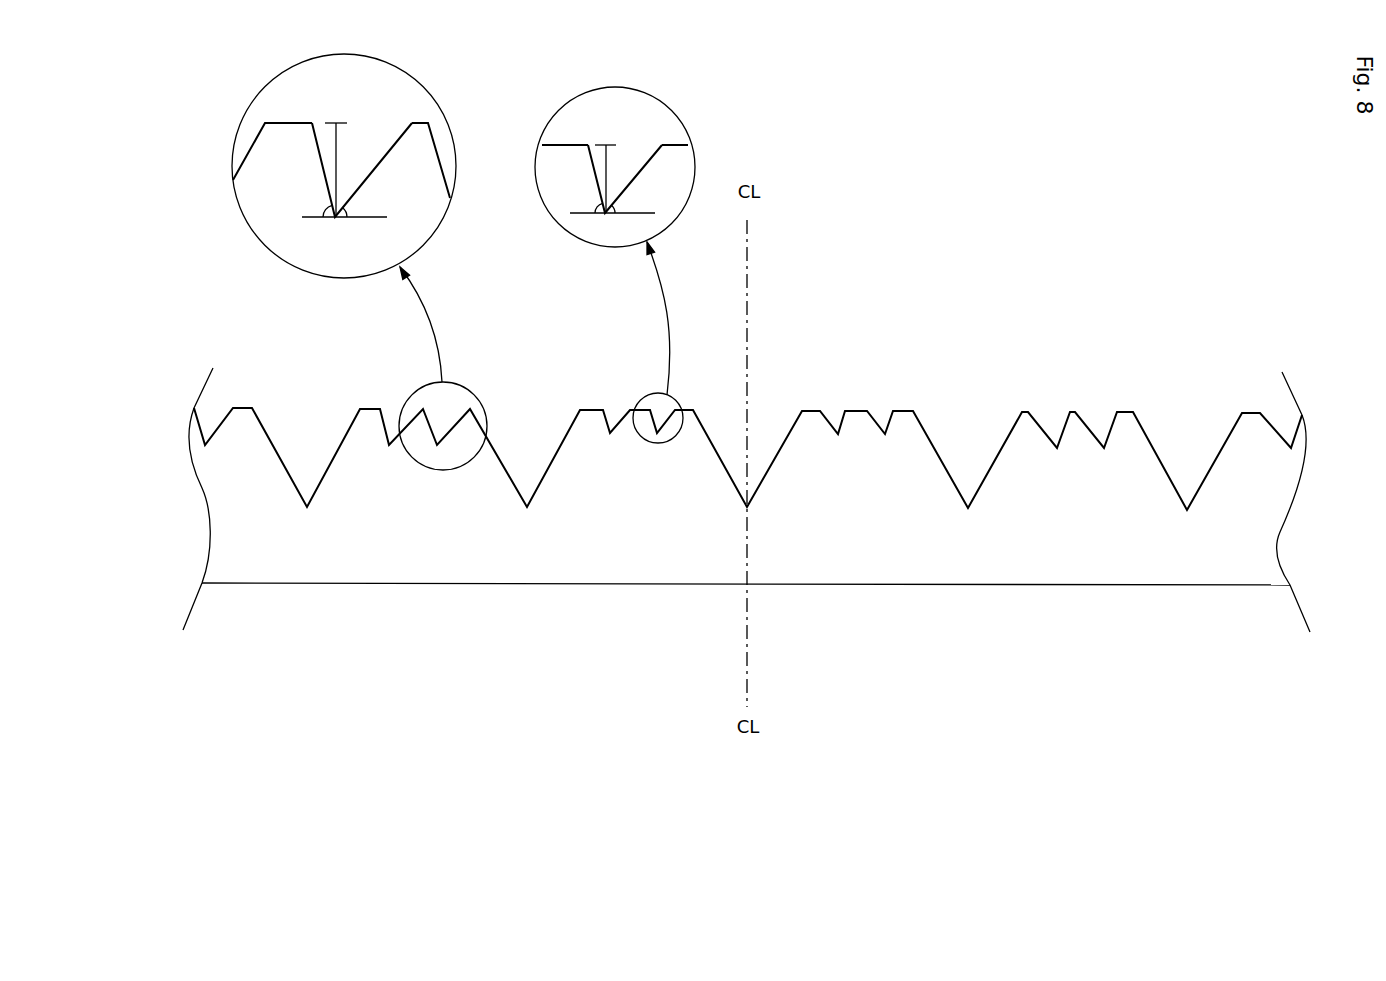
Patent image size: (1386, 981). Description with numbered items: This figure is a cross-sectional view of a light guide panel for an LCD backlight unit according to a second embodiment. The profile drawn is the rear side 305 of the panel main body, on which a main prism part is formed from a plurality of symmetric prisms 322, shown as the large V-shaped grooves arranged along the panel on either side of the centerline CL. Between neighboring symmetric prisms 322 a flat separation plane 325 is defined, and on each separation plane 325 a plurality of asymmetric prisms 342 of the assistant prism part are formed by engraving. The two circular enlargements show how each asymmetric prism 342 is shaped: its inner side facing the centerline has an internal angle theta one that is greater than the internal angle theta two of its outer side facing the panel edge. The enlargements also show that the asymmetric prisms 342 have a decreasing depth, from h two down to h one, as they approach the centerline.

The rear side 305 is at (997, 585).
The symmetric prism 322 is at (252, 395).
The separation plane 325 is at (265, 117).
The asymmetric prism 342 is at (312, 117).